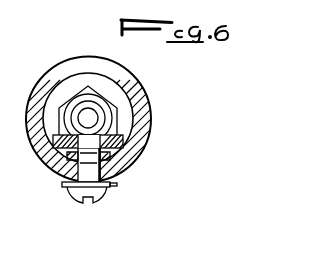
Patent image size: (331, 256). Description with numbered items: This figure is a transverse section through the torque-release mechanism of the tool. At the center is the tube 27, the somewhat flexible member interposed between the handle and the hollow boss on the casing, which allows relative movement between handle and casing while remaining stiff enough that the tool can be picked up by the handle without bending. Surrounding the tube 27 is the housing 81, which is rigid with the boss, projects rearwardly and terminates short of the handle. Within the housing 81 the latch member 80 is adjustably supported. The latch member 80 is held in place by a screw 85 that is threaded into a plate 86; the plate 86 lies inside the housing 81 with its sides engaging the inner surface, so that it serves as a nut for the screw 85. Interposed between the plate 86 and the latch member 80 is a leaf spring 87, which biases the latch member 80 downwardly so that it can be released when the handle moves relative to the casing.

The tube 27 is at (86, 101).
The housing 81 is at (143, 98).
The plate 86 is at (123, 142).
The leaf spring 87 is at (118, 153).
The latch member 80 is at (110, 153).
The screw 85 is at (100, 203).